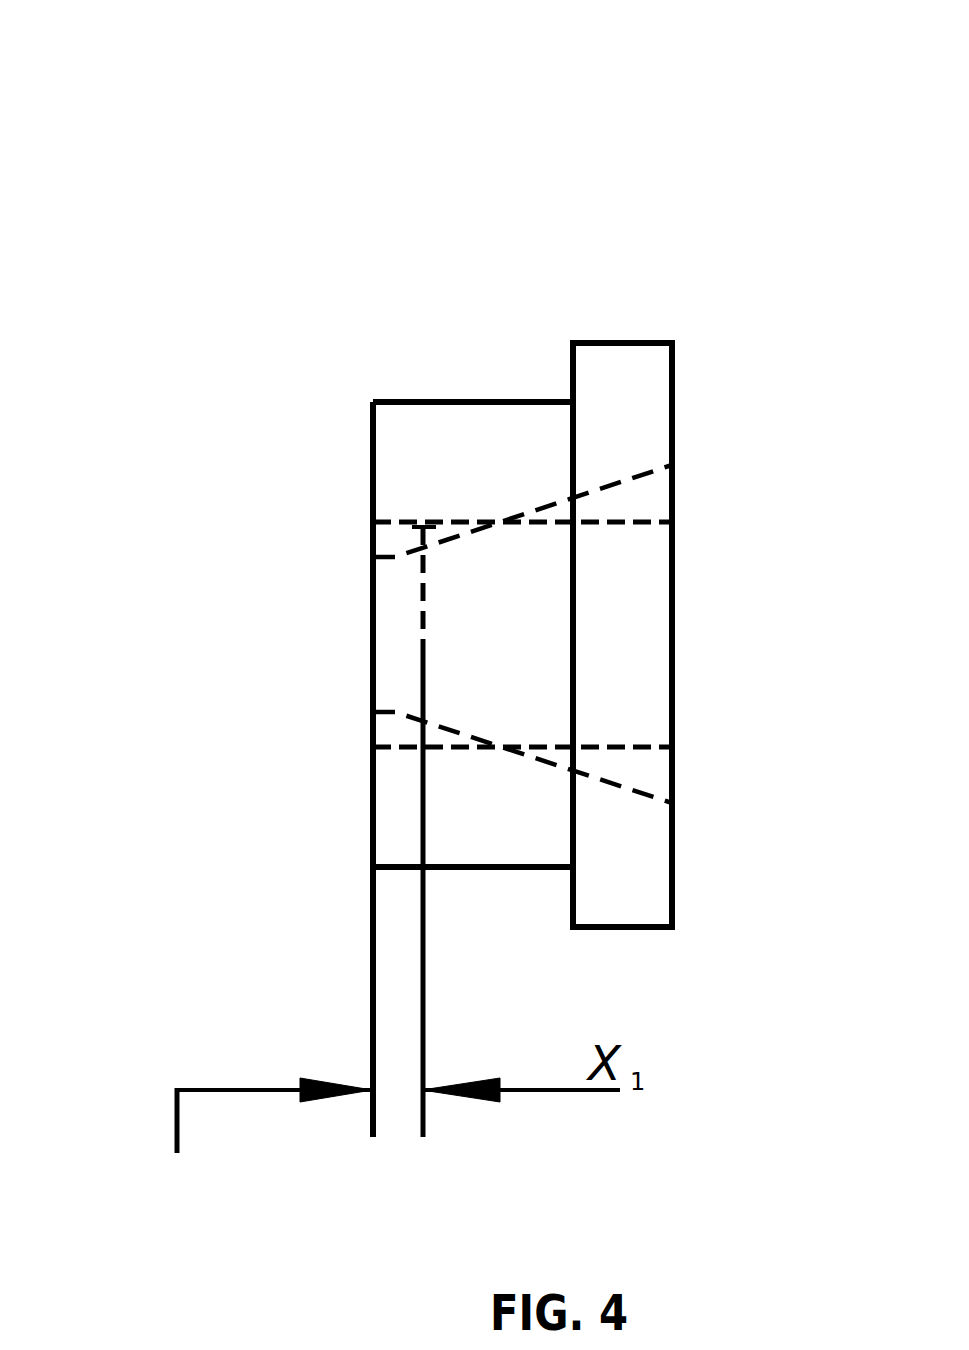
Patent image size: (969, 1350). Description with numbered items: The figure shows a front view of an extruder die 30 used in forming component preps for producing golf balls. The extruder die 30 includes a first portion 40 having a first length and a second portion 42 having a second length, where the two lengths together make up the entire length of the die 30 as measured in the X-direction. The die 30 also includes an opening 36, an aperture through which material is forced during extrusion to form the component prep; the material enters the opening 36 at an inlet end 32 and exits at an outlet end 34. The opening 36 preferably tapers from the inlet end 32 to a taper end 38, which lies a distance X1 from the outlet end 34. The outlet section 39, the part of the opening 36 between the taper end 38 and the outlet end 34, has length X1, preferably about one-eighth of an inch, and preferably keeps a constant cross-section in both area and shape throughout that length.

The extruder die 30 is at (120, 44).
The inlet end 32 is at (677, 720).
The outlet end 34 is at (372, 655).
The opening 36 is at (498, 655).
The taper end 38 is at (425, 583).
The outlet section 39 is at (392, 625).
The first portion 40 is at (620, 343).
The second portion 42 is at (488, 402).